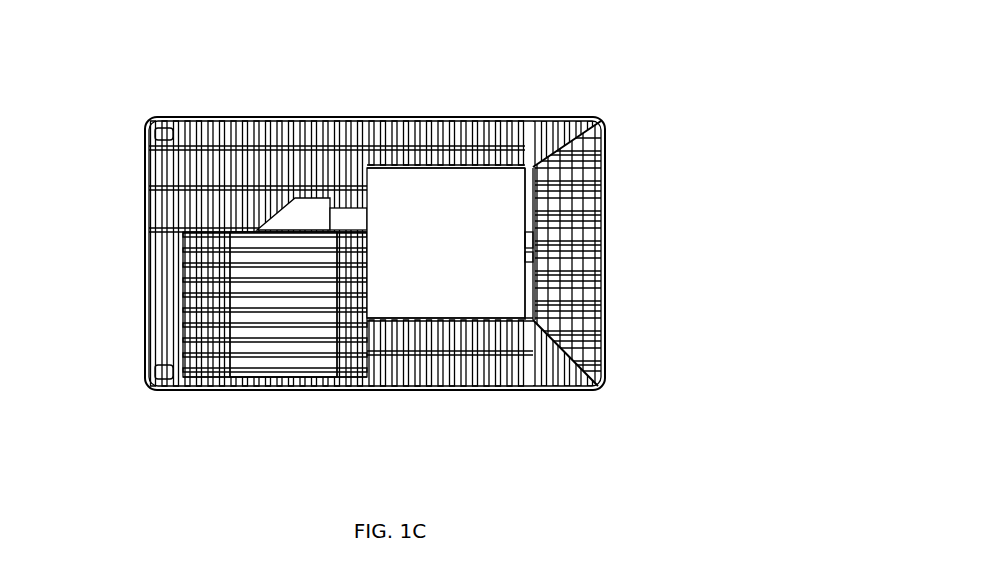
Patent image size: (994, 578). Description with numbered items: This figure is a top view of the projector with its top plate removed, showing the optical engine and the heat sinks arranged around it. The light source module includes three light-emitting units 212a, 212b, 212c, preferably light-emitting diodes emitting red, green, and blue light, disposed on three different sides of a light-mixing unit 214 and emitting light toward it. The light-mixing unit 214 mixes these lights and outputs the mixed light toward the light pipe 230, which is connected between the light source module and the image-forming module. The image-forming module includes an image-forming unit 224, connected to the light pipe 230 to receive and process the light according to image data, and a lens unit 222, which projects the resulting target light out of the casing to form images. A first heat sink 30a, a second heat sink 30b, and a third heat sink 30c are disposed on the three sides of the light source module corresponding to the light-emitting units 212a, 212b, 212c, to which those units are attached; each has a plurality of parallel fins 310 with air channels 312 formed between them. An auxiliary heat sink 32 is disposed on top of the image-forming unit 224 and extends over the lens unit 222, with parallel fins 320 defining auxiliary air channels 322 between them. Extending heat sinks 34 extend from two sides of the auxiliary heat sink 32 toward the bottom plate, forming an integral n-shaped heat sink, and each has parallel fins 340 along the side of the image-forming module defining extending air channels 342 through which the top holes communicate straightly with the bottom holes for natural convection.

The light-emitting unit 212a is at (446, 128).
The light-emitting unit 212b is at (528, 240).
The light-emitting unit 212c is at (446, 337).
The light-mixing unit 214 is at (530, 167).
The lens unit 222 is at (255, 380).
The image-forming unit 224 is at (285, 220).
The light pipe 230 is at (350, 222).
The first heat sink 30a is at (418, 165).
The second heat sink 30b is at (537, 257).
The third heat sink 30c is at (422, 340).
The fins 310 is at (502, 185).
The air channels 312 is at (441, 128).
The auxiliary heat sink 32 is at (318, 383).
The fins 320 is at (330, 325).
The auxiliary air channels 322 is at (297, 350).
The extending heat sink 34 is at (183, 390).
The fins 340 is at (185, 325).
The extending air channels 342 is at (195, 303).